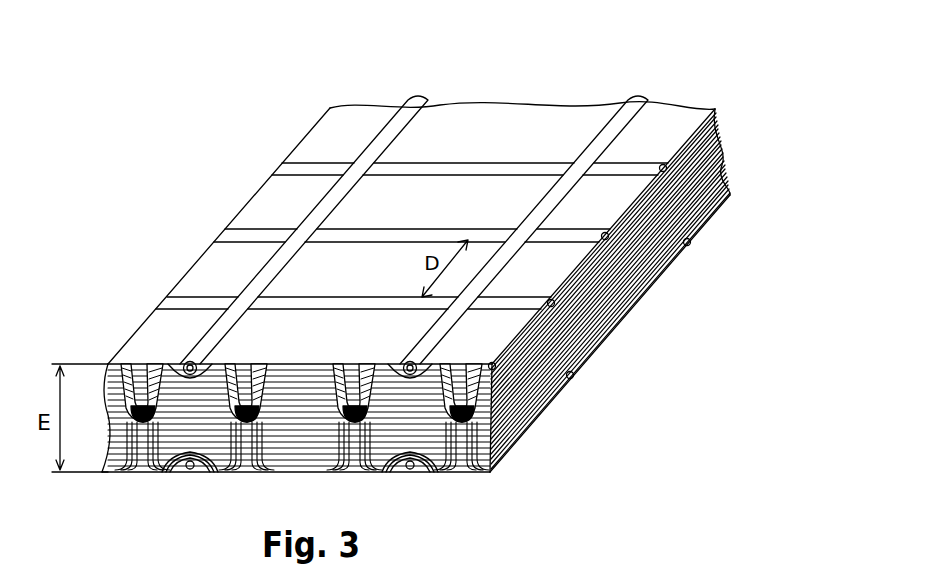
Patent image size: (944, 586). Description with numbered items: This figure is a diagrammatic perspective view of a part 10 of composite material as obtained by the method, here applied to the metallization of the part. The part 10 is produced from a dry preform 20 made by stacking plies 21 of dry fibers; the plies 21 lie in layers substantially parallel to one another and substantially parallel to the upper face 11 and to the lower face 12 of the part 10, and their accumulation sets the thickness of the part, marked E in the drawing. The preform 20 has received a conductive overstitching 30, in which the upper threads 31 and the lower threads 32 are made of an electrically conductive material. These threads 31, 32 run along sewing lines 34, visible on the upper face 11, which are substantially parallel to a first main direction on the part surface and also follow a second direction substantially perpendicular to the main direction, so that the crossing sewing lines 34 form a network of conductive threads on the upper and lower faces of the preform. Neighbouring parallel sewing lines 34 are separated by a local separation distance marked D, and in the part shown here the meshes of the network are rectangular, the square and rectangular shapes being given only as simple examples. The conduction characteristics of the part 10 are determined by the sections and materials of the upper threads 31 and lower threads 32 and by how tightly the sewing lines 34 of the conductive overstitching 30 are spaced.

The part 10 is at (449, 293).
The upper face 11 is at (660, 132).
The lower face 12 is at (413, 476).
The preform 20 is at (724, 170).
The plies 21 is at (643, 318).
The conductive overstitching 30 is at (508, 472).
The upper threads 31 is at (189, 364).
The lower threads 32 is at (148, 476).
The sewing lines 34 is at (430, 118).